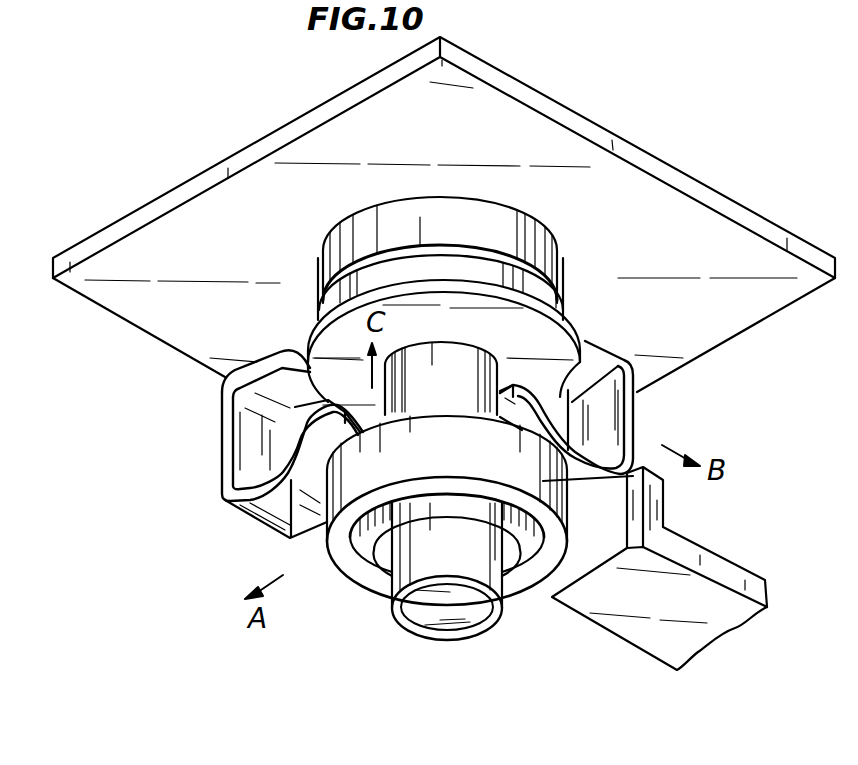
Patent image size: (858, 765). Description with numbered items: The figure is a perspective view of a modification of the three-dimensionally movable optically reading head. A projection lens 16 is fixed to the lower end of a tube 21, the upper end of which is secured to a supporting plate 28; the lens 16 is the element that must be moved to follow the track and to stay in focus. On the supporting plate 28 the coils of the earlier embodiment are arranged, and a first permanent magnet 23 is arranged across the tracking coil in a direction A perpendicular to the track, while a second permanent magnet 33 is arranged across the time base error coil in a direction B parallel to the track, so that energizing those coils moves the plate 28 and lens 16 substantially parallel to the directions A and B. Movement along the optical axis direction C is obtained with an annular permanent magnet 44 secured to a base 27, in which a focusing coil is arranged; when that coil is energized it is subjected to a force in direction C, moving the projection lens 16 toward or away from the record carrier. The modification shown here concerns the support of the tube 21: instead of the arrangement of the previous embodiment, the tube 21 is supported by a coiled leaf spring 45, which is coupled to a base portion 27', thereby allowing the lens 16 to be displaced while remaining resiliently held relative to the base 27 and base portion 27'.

The projection lens 16 is at (430, 622).
The tube 21 is at (483, 631).
The first permanent magnet 23 is at (220, 436).
The base 27 is at (444, 214).
The base portion 27' is at (685, 568).
The supporting plate 28 is at (310, 337).
The second permanent magnet 33 is at (638, 428).
The annular permanent magnet 44 is at (557, 262).
The coiled leaf spring 45 is at (349, 576).